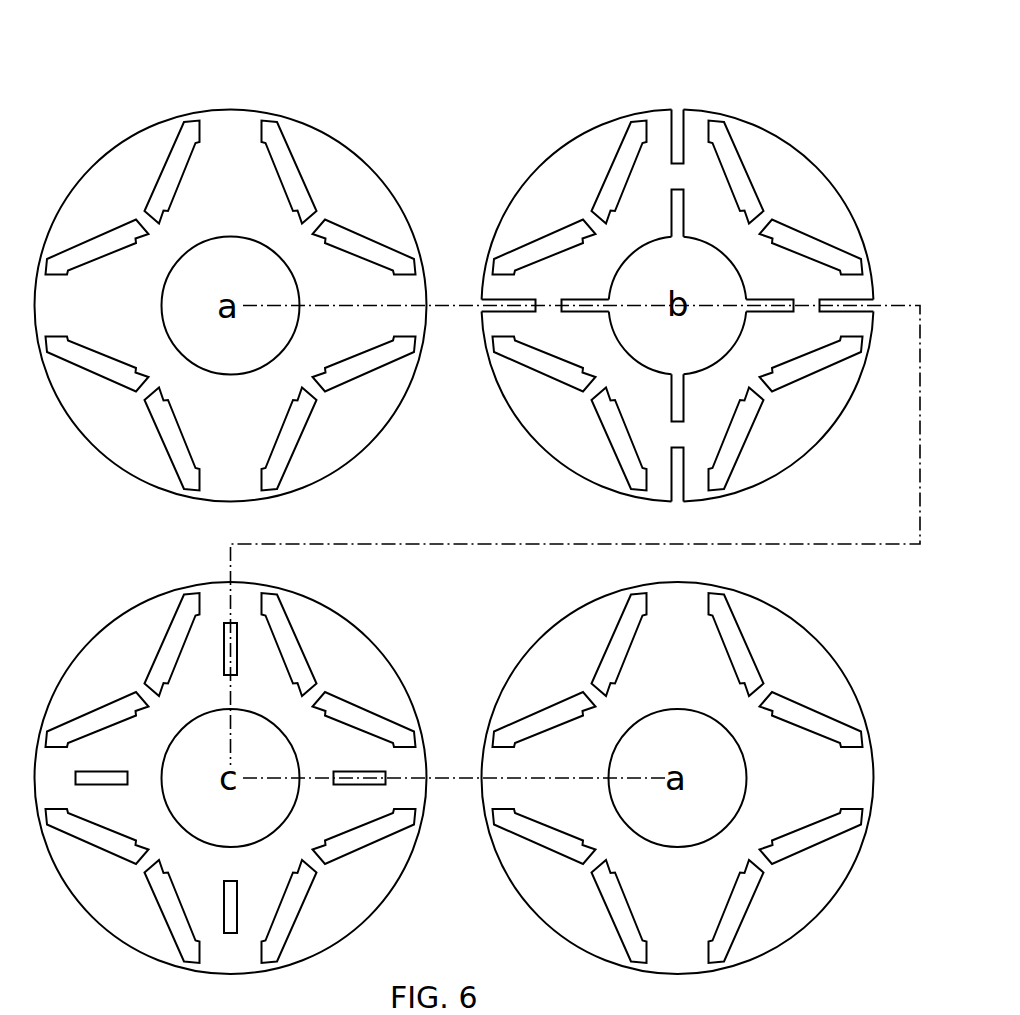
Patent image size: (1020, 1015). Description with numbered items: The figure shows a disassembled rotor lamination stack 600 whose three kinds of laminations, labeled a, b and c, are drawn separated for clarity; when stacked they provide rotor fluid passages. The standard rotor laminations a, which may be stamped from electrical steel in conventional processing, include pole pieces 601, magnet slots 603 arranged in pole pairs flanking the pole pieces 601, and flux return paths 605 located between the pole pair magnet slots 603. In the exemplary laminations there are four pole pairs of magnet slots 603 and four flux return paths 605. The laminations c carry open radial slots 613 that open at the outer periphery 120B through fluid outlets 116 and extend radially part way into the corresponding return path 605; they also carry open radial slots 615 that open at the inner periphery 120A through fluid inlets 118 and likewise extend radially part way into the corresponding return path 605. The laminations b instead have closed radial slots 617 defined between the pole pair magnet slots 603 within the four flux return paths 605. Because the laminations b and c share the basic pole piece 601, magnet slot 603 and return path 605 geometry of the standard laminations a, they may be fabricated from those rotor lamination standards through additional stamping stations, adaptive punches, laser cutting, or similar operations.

The lamination stack 600 is at (134, 47).
The pole pieces 601 is at (105, 178).
The magnet slots 603 is at (177, 158).
The flux return paths 605 is at (230, 140).
The inner periphery 120A is at (732, 262).
The outer periphery 120B is at (356, 156).
The fluid outlets 116 is at (675, 108).
The open radial slots 613 is at (682, 116).
The open radial slots 615 is at (674, 211).
The fluid inlets 118 is at (675, 238).
The closed radial slots 617 is at (222, 645).